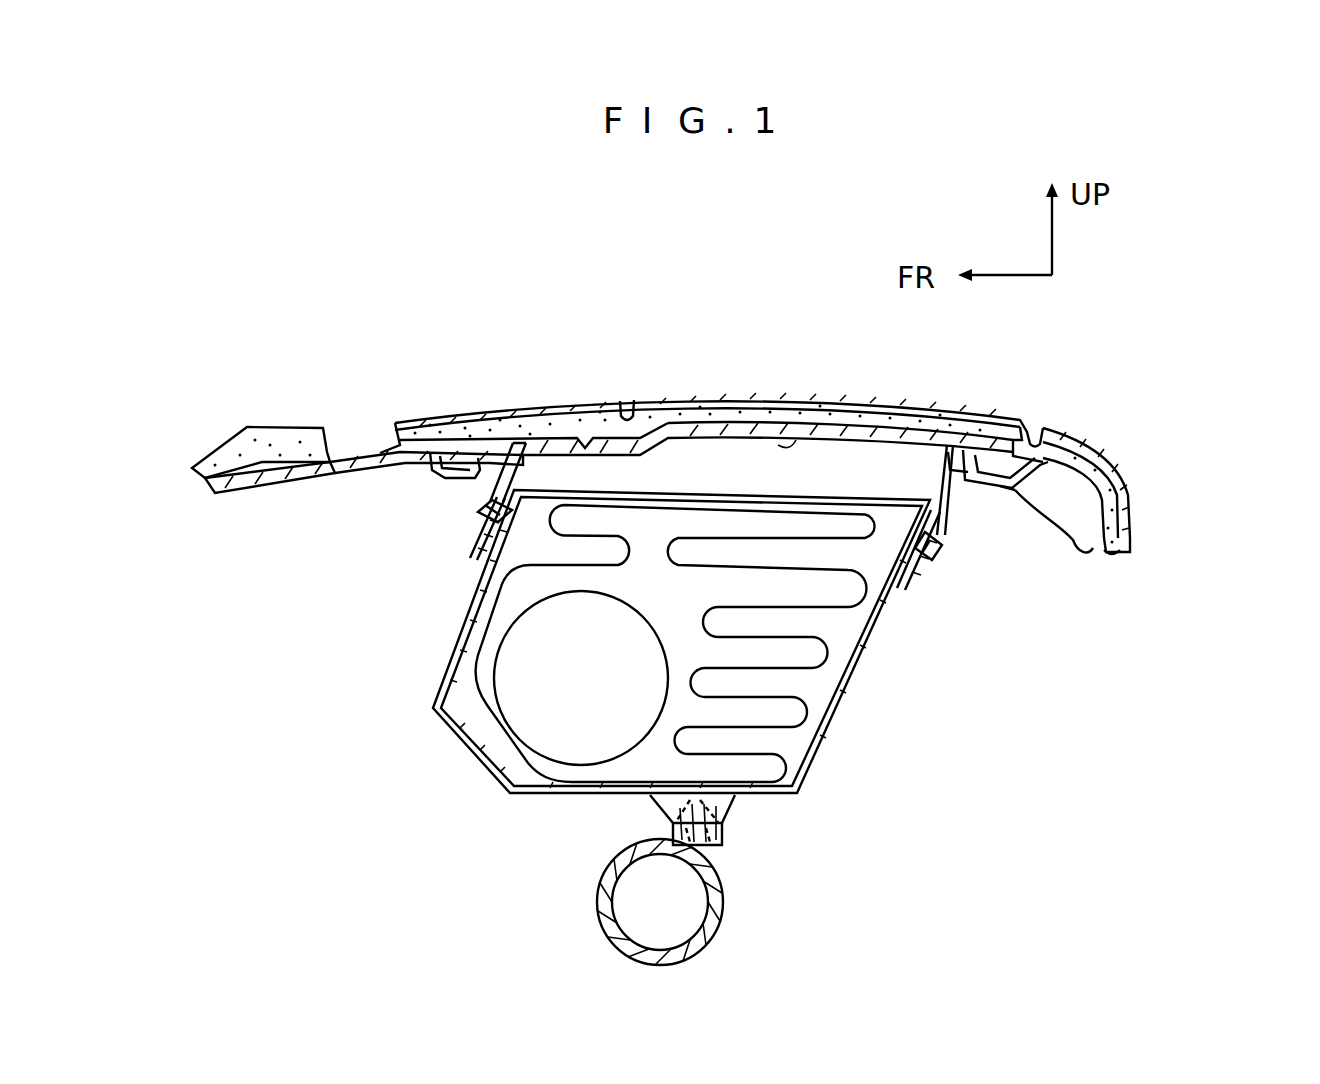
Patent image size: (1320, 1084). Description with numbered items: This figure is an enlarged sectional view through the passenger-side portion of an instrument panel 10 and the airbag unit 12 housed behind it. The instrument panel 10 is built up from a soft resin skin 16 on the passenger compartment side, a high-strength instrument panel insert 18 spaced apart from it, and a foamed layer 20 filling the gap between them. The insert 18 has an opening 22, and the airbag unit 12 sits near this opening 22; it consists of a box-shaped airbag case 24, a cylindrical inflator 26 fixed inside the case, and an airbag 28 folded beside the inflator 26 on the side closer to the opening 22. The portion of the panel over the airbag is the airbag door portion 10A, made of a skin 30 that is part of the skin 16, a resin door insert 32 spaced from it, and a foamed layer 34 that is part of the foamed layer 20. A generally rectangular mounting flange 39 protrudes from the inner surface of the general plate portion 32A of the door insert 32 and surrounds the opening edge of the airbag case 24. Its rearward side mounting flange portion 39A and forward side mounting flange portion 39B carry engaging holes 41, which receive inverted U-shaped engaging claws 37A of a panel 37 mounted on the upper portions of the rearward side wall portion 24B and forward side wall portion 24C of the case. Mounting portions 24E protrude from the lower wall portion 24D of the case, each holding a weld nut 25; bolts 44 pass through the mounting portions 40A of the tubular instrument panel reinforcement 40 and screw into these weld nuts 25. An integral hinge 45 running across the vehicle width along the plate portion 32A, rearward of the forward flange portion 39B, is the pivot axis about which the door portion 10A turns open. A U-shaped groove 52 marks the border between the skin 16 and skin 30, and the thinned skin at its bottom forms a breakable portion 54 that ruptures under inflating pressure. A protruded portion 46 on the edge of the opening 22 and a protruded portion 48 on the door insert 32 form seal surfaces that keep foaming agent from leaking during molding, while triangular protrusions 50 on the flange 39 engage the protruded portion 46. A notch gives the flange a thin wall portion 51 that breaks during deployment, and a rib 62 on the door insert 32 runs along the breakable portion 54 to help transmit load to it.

The instrument panel 10 is at (1146, 494).
The airbag door portion 10A is at (897, 404).
The airbag unit 12 is at (684, 727).
The skin 16 is at (1095, 438).
The instrument panel insert 18 is at (1073, 556).
The foamed layer 20 is at (1115, 553).
The opening 22 is at (487, 440).
The airbag case 24 is at (843, 697).
The rearward side wall portion 24B is at (852, 648).
The forward side wall portion 24C is at (458, 660).
The lower wall portion 24D is at (580, 798).
The mounting portions 24E is at (737, 800).
The weld nut 25 is at (668, 805).
The inflator 26 is at (523, 723).
The airbag 28 is at (822, 745).
The skin 30 is at (830, 404).
The door insert 32 is at (746, 430).
The general plate portion 32A is at (778, 445).
The foamed layer 34 is at (715, 420).
The panel 37 is at (490, 565).
The engaging claws 37A is at (486, 516).
The mounting flange 39 is at (932, 489).
The rearward side mounting flange portion 39A is at (953, 533).
The forward side mounting flange portion 39B is at (536, 465).
The instrument panel reinforcement 40 is at (723, 912).
The mounting portions 40A is at (726, 840).
The engaging holes 41 is at (521, 510).
The bolts 44 is at (725, 838).
The integral hinge 45 is at (582, 436).
The protruded portion 46 is at (988, 430).
The protruded portion 48 is at (1083, 447).
The protrusions 50 is at (472, 480).
The thin wall portion 51 is at (952, 442).
The groove 52 is at (627, 402).
The breakable portion 54 is at (1060, 443).
The rib 62 is at (1027, 435).